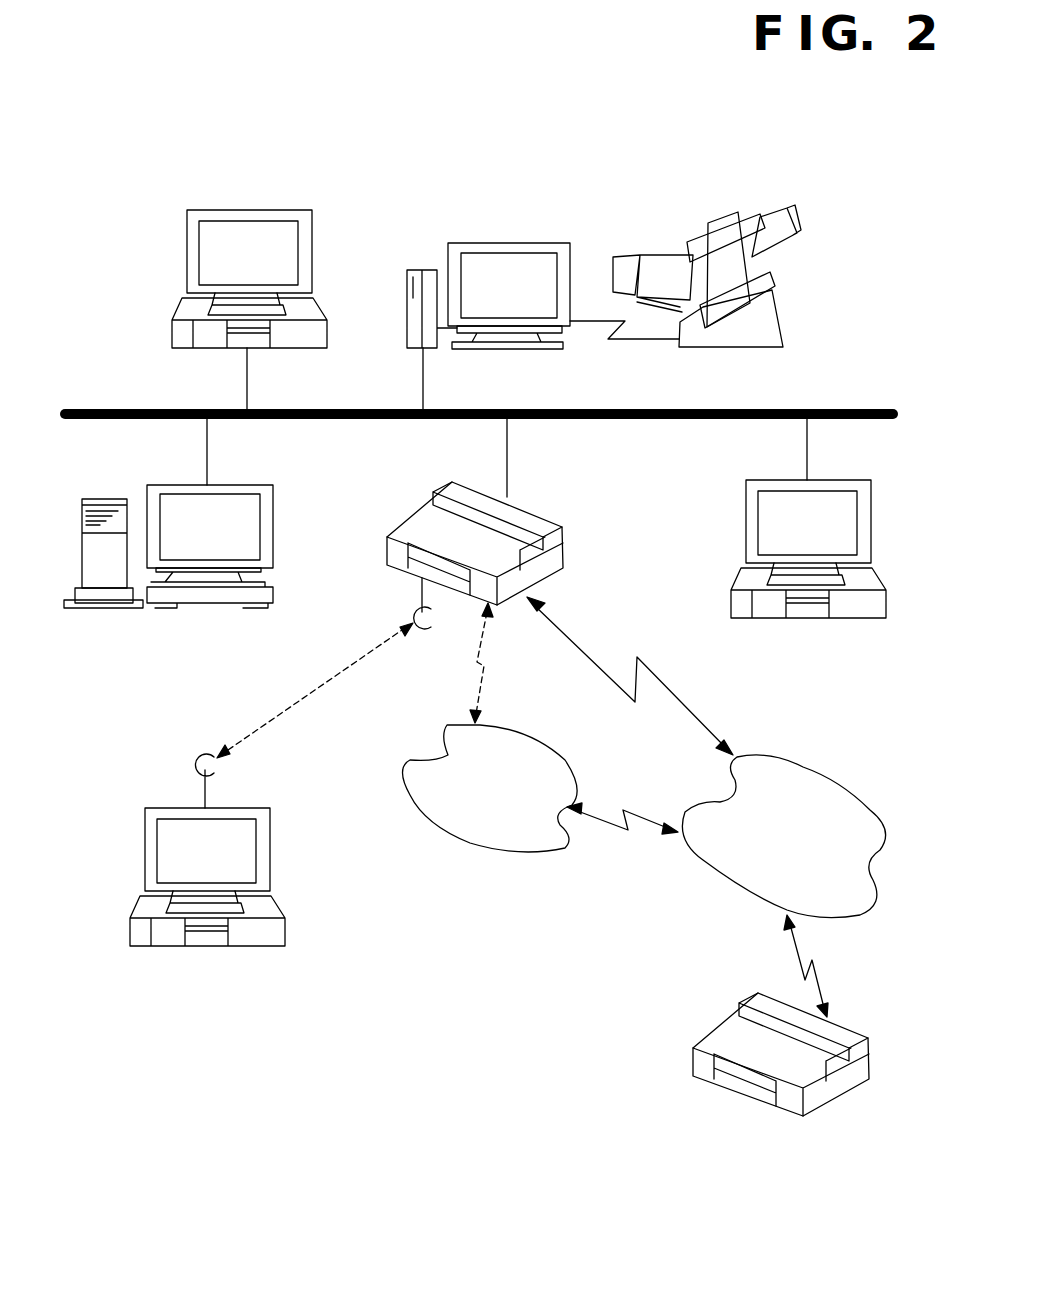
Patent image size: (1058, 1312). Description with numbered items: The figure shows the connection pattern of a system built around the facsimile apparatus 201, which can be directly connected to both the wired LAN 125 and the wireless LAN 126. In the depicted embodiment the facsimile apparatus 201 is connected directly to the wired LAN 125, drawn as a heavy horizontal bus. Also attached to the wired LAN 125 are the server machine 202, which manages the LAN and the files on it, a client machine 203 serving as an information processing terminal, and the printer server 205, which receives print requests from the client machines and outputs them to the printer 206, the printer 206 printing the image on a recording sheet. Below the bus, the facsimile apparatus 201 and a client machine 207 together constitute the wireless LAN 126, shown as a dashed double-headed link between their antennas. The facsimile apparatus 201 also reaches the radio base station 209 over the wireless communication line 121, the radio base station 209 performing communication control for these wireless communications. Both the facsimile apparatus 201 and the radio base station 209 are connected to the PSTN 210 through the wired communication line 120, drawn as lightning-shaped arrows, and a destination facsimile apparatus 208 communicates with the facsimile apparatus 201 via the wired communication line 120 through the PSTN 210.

The wired communication line 120 is at (670, 683).
The wireless communication line 121 is at (483, 697).
The wired LAN 125 is at (632, 410).
The wireless LAN 126 is at (280, 715).
The facsimile apparatus 201 is at (545, 515).
The server machine 202 is at (198, 603).
The client machine 203 is at (209, 210).
The printer server 205 is at (480, 243).
The printer 206 is at (725, 212).
The client machine 207 is at (745, 618).
The destination facsimile apparatus 208 is at (748, 1098).
The radio base station 209 is at (440, 832).
The PSTN 210 is at (810, 767).